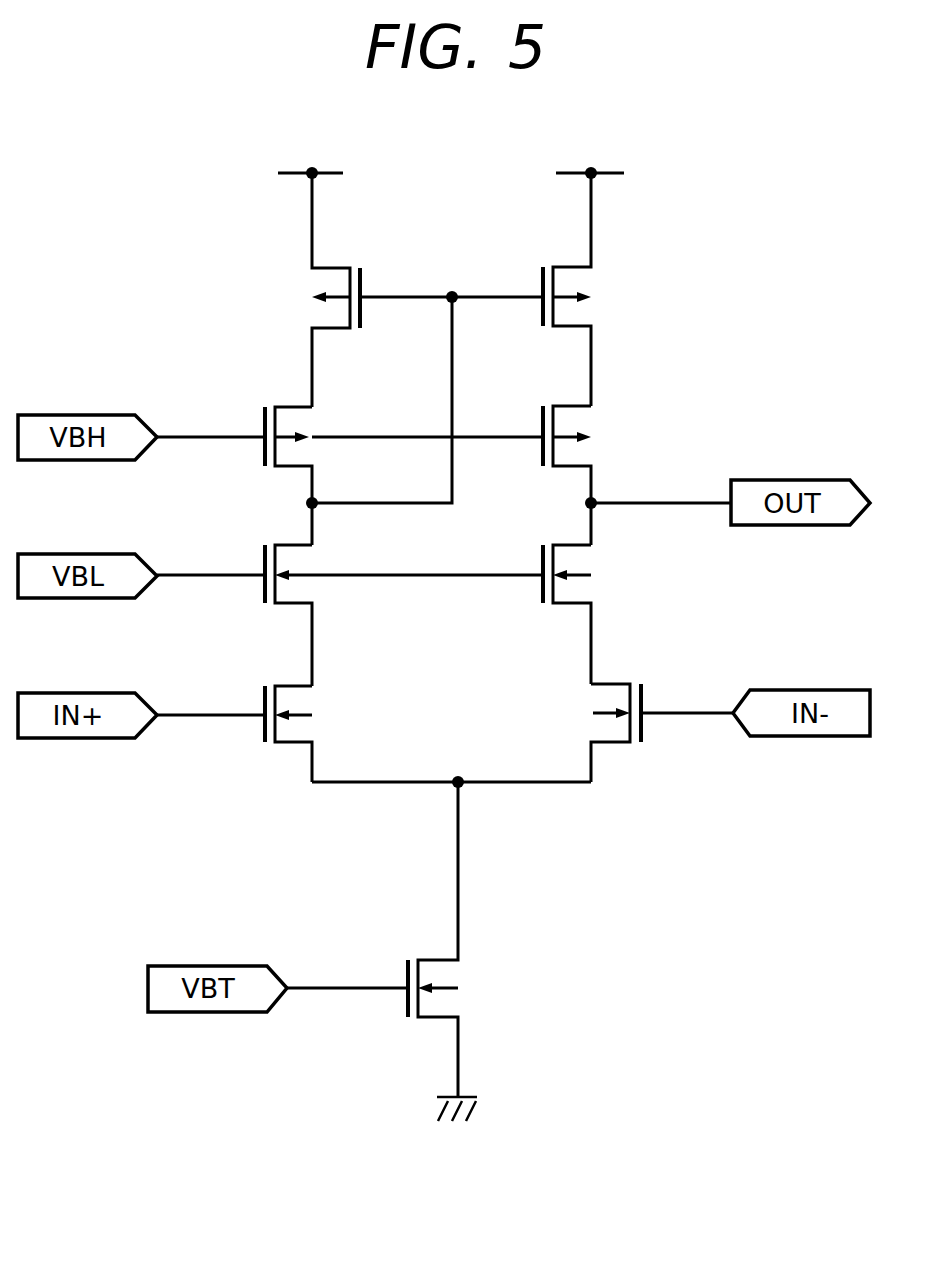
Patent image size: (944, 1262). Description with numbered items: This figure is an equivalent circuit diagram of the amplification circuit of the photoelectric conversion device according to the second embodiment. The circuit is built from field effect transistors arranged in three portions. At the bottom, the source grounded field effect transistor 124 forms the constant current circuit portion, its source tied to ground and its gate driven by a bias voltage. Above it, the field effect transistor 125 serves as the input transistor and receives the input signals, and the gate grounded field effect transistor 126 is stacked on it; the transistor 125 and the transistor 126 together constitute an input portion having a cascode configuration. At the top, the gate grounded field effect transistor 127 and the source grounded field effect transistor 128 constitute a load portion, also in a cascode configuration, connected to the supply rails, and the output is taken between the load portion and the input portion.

The source grounded field effect transistor 124 is at (400, 1010).
The field effect transistor 125 is at (258, 730).
The gate grounded field effect transistor 126 is at (258, 590).
The gate grounded field effect transistor 127 is at (258, 450).
The source grounded field effect transistor 128 is at (313, 285).